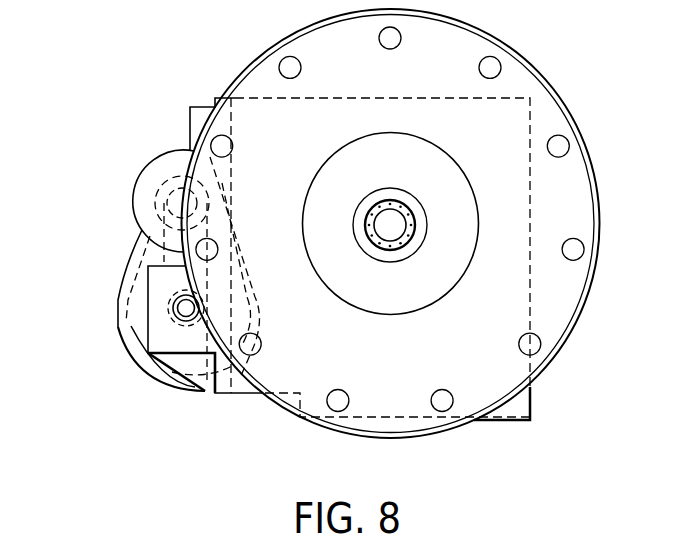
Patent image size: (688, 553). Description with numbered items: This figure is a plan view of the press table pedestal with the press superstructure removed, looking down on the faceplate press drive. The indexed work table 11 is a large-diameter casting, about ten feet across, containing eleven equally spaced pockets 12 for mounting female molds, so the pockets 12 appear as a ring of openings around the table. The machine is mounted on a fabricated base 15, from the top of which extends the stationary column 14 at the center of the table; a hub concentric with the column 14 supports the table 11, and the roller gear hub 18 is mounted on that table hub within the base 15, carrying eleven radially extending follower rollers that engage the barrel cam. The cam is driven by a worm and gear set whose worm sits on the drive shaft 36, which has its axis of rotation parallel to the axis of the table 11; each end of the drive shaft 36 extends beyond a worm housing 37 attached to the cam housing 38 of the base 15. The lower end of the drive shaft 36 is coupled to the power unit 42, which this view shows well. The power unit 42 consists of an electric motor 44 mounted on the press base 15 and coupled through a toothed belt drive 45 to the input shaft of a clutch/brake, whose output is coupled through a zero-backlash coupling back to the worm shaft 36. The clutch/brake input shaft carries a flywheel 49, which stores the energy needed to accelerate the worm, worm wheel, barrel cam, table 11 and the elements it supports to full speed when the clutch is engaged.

The indexed work table 11 is at (601, 215).
The pockets 12 is at (282, 60).
The stationary column 14 is at (412, 240).
The base 15 is at (532, 405).
The roller gear hub 18 is at (444, 176).
The drive shaft 36 is at (186, 310).
The worm housing 37 is at (147, 324).
The cam housing 38 is at (190, 132).
The power unit 42 is at (108, 241).
The electric motor 44 is at (133, 200).
The toothed belt drive 45 is at (147, 298).
The flywheel 49 is at (114, 358).